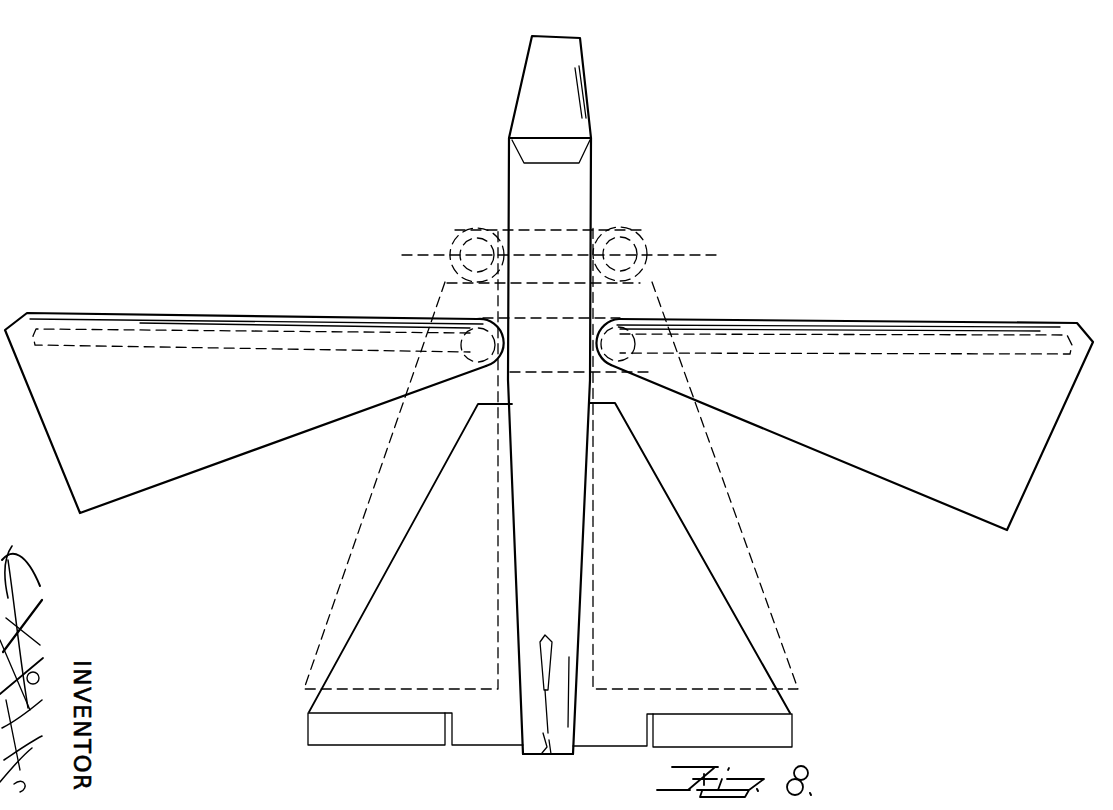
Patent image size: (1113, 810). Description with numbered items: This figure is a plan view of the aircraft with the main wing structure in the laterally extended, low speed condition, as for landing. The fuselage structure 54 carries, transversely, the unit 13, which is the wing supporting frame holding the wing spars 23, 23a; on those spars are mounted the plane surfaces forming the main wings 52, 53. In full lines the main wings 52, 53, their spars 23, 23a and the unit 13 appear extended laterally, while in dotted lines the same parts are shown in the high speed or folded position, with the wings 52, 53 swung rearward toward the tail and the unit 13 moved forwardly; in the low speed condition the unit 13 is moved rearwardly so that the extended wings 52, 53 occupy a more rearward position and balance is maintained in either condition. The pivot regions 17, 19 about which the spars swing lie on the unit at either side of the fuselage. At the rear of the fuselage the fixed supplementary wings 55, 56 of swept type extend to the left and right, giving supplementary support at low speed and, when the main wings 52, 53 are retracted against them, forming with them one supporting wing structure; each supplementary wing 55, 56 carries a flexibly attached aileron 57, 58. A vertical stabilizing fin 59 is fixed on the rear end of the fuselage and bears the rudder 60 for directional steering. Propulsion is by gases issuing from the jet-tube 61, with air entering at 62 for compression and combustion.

The unit 13 is at (538, 220).
The left wing pivot 17 is at (478, 270).
The right wing pivot 19 is at (630, 258).
The wing spar 23 is at (203, 355).
The wing spar 23a is at (893, 355).
The main wing 52 is at (230, 317).
The main wing 53 is at (840, 323).
The fuselage structure 54 is at (593, 163).
The supplementary wing 55 is at (448, 465).
The supplementary wing 56 is at (690, 508).
The aileron 57 is at (360, 748).
The aileron 58 is at (800, 732).
The vertical stabilizing fin 59 is at (558, 622).
The rudder 60 is at (542, 756).
The jet-tube 61 is at (559, 756).
The air entry 62 is at (568, 36).